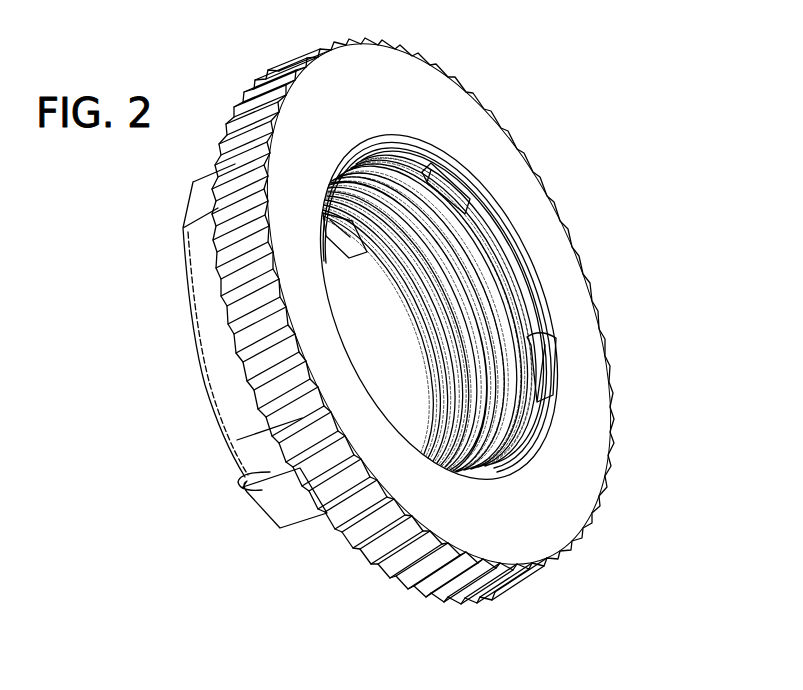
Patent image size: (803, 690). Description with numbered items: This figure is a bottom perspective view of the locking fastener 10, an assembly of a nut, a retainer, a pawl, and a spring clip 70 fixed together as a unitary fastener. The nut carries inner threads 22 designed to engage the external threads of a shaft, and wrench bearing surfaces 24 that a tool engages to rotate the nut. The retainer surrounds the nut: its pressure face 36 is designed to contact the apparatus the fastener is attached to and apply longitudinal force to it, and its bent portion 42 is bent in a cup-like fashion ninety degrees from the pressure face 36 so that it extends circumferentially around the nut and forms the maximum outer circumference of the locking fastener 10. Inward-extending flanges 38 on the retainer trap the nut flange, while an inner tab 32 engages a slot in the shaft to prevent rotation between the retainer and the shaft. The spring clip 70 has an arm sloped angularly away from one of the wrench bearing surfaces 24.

The locking fastener 10 is at (248, 46).
The bent portion 42 is at (271, 74).
The flanges 38 is at (232, 193).
The wrench bearing surfaces 24 is at (210, 307).
The spring clip 70 is at (440, 183).
The pressure face 36 is at (493, 180).
The inner threads 22 is at (448, 336).
The inner tab 32 is at (540, 312).